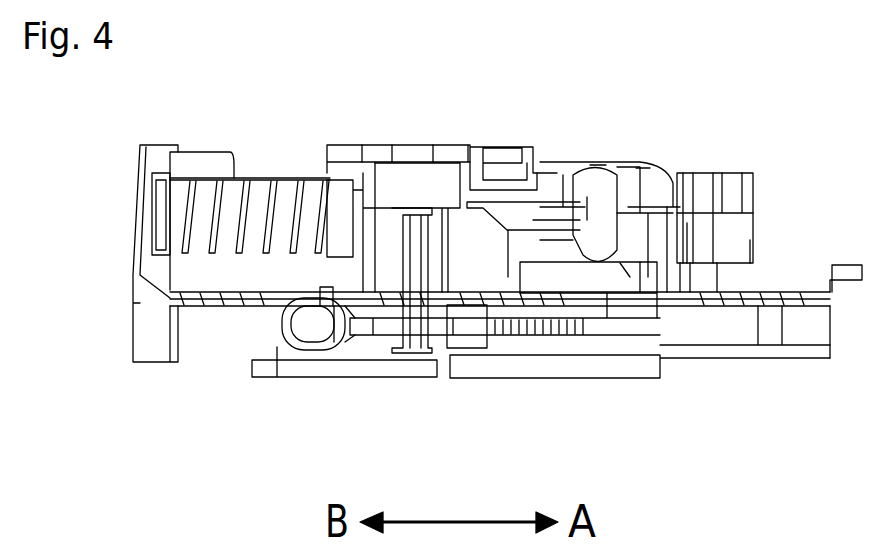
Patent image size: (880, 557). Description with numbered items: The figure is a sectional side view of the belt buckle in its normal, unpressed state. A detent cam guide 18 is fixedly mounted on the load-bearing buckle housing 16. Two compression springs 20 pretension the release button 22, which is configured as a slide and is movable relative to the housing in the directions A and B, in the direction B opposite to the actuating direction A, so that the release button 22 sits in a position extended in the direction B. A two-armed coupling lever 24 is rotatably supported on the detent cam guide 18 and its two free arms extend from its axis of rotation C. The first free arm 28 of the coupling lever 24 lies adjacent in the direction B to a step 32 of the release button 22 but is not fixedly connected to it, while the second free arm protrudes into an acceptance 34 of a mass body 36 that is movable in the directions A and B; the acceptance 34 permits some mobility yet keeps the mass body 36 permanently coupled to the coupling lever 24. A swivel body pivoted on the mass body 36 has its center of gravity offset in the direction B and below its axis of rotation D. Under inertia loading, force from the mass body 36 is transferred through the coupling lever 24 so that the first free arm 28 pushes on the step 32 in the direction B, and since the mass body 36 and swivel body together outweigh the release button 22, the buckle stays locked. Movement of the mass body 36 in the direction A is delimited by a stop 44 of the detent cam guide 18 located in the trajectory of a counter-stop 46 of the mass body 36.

The buckle housing 16 is at (276, 337).
The detent cam guide 18 is at (420, 157).
The compression springs 20 is at (282, 172).
The release button 22 is at (142, 248).
The coupling lever 24 is at (583, 230).
The first free arm 28 is at (640, 287).
The step 32 is at (593, 282).
The acceptance 34 is at (598, 240).
The mass body 36 is at (330, 145).
The stop 44 is at (366, 145).
The counter-stop 46 is at (358, 145).
The axis of rotation C is at (643, 167).
The axis of rotation D is at (598, 165).